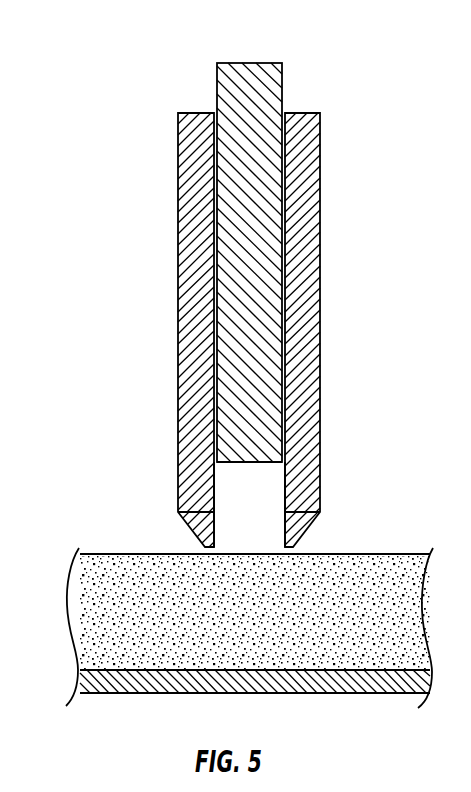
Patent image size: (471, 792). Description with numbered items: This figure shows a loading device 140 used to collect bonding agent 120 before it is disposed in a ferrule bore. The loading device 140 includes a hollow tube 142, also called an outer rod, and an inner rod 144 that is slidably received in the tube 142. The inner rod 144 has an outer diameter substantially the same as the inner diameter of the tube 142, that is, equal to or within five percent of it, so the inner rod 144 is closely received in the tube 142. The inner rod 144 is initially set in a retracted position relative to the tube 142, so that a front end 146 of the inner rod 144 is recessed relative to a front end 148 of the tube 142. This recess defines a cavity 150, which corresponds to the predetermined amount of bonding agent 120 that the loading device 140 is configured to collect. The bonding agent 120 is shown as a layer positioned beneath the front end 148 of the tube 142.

The bonding agent 120 is at (108, 553).
The loading device 140 is at (224, 291).
The hollow tube 142 is at (178, 208).
The inner rod 144 is at (217, 89).
The front end of the inner rod 146 is at (265, 463).
The front end of the tube 148 is at (293, 548).
The cavity 150 is at (236, 475).